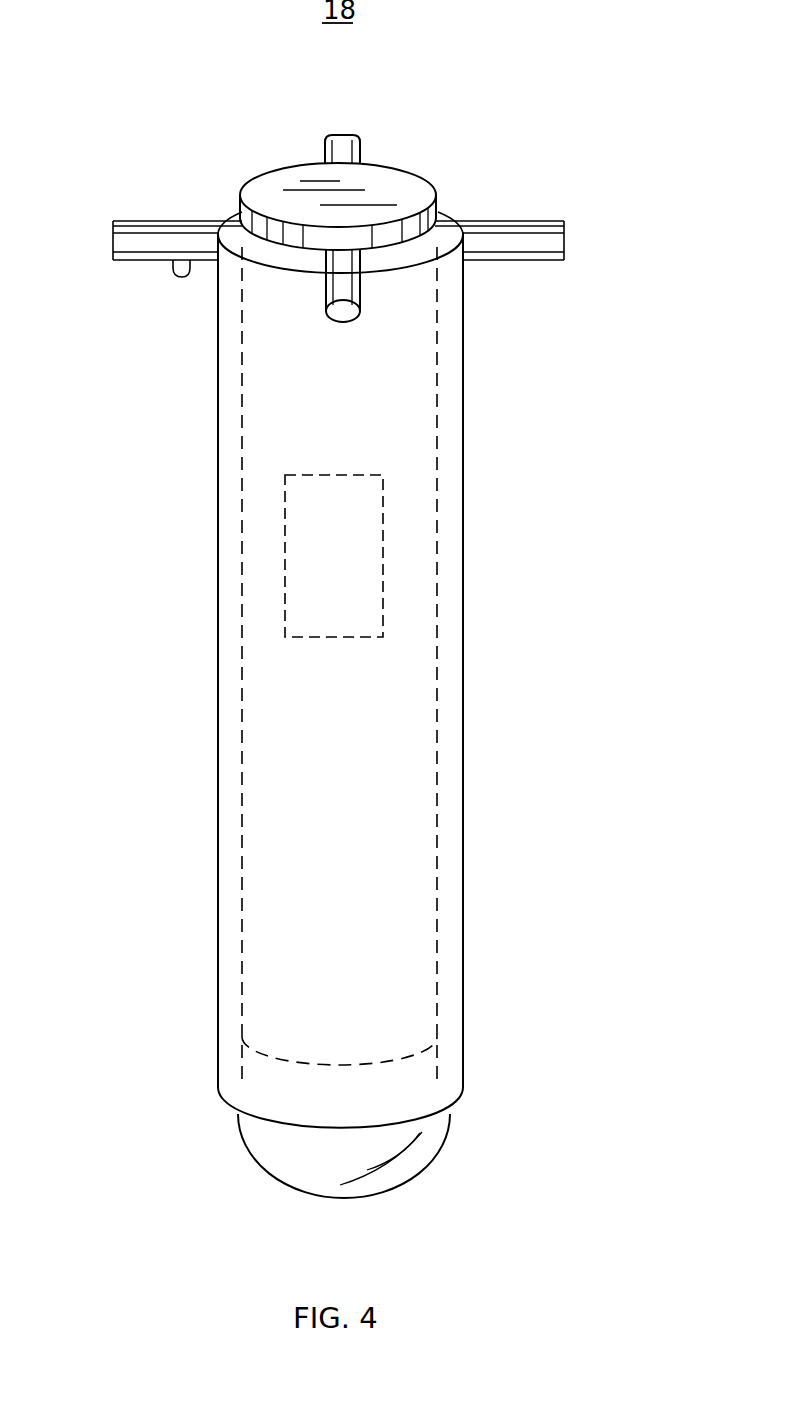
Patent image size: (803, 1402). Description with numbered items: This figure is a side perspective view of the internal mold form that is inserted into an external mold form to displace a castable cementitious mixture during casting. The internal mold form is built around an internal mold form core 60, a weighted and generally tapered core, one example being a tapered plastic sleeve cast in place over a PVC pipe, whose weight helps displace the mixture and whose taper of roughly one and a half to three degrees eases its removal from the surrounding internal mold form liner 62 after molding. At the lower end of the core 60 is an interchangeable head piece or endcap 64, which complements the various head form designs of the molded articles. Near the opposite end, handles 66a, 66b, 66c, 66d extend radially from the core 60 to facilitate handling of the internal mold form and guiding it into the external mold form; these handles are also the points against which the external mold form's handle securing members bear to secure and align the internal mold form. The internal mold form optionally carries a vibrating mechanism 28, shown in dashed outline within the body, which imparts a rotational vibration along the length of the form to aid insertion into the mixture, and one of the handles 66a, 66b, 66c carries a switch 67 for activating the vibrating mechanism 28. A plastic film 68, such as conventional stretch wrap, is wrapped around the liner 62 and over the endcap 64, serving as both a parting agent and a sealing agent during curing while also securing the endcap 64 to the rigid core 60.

The internal mold form core 60 is at (430, 198).
The internal mold form liner 62 is at (463, 468).
The head piece 64 is at (400, 1170).
The handle 66a is at (548, 232).
The handle 66b is at (340, 320).
The handle 66c is at (176, 228).
The handle 66d is at (325, 148).
The switch 67 is at (173, 268).
The plastic film 68 is at (450, 1117).
The vibrating mechanism 28 is at (383, 592).